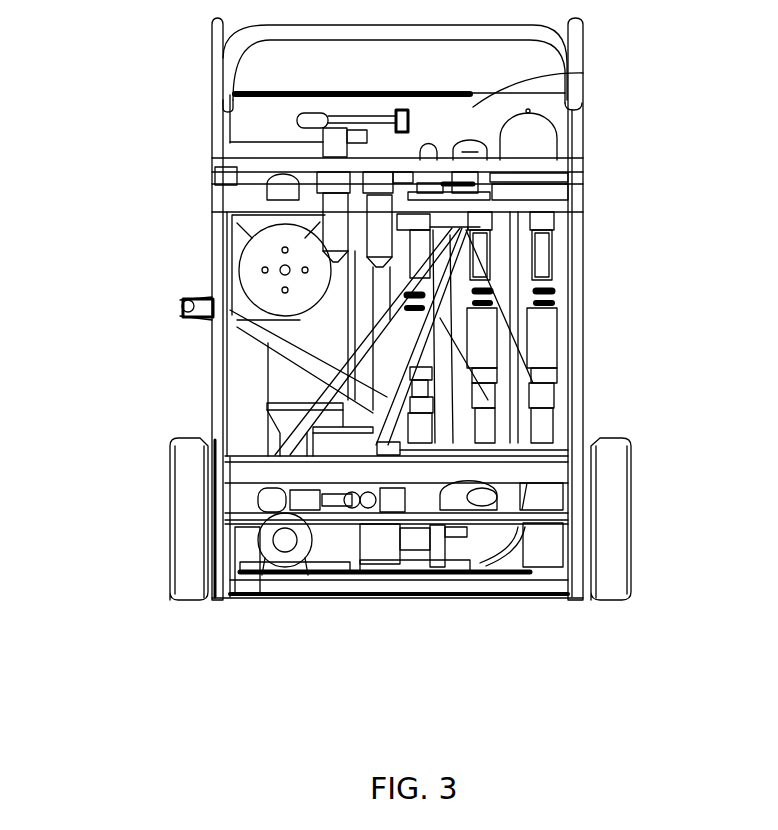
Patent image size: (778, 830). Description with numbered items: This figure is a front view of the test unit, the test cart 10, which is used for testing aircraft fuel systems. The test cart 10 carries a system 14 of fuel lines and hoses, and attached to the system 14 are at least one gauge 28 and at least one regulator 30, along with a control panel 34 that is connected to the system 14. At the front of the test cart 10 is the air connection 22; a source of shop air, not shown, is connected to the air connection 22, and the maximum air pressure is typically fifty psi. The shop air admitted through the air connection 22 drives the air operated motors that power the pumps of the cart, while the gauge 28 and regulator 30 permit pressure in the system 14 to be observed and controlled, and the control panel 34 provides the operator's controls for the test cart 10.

The test cart 10 is at (213, 350).
The system 14 is at (136, 274).
The air connection 22 is at (213, 177).
The gauge 28 is at (538, 139).
The regulator 30 is at (380, 218).
The control panel 34 is at (583, 73).